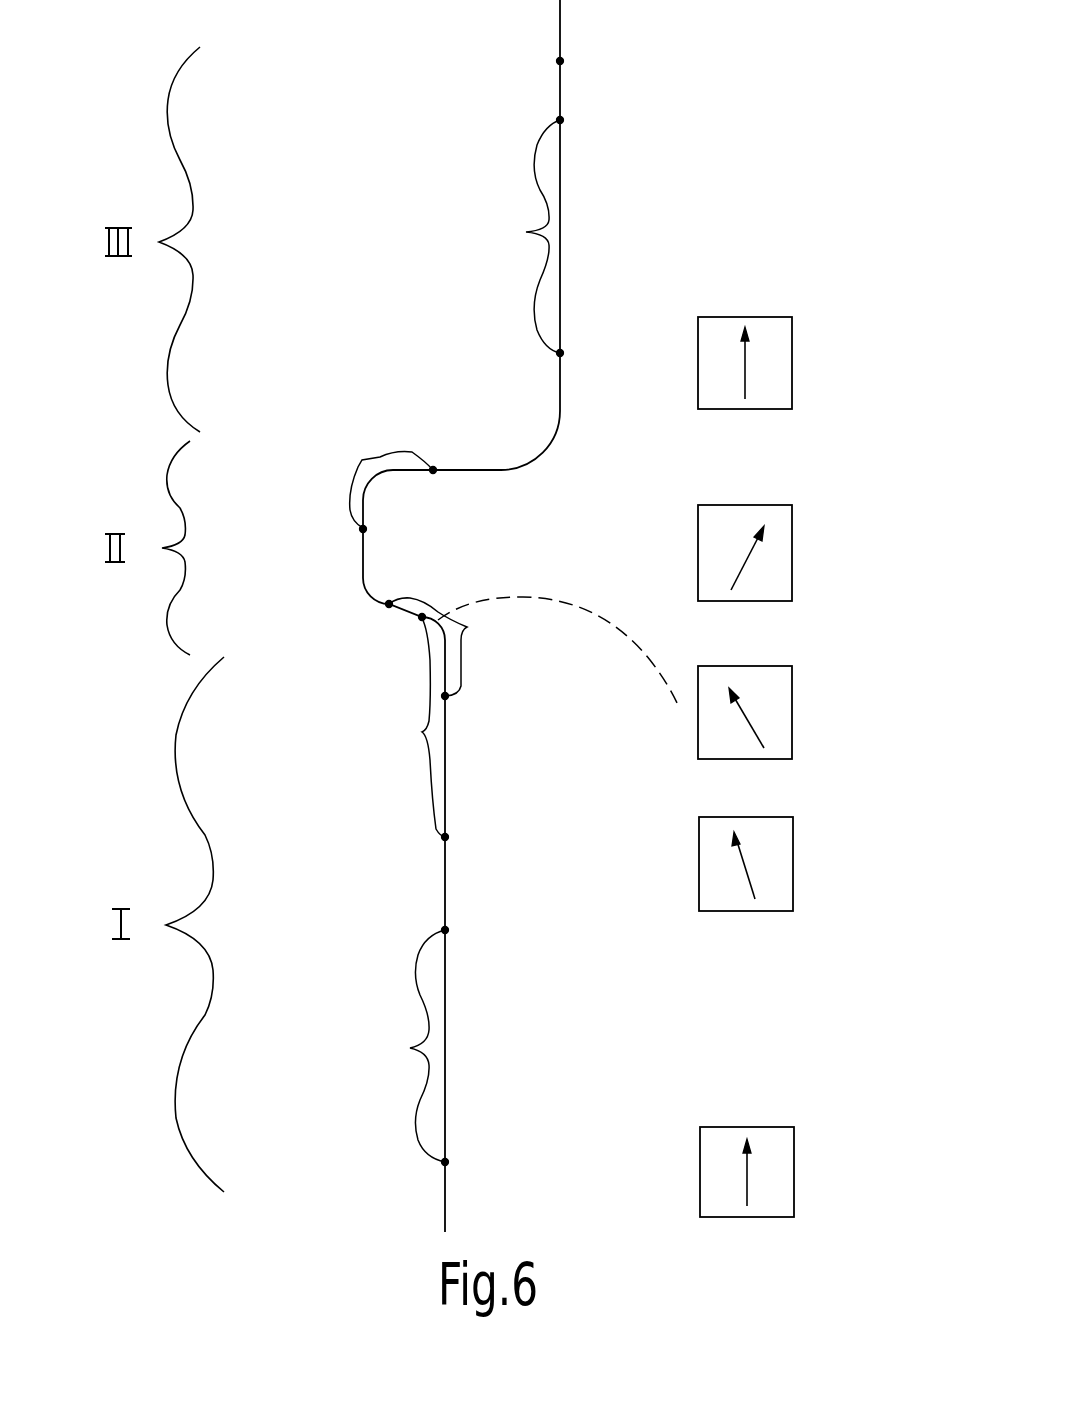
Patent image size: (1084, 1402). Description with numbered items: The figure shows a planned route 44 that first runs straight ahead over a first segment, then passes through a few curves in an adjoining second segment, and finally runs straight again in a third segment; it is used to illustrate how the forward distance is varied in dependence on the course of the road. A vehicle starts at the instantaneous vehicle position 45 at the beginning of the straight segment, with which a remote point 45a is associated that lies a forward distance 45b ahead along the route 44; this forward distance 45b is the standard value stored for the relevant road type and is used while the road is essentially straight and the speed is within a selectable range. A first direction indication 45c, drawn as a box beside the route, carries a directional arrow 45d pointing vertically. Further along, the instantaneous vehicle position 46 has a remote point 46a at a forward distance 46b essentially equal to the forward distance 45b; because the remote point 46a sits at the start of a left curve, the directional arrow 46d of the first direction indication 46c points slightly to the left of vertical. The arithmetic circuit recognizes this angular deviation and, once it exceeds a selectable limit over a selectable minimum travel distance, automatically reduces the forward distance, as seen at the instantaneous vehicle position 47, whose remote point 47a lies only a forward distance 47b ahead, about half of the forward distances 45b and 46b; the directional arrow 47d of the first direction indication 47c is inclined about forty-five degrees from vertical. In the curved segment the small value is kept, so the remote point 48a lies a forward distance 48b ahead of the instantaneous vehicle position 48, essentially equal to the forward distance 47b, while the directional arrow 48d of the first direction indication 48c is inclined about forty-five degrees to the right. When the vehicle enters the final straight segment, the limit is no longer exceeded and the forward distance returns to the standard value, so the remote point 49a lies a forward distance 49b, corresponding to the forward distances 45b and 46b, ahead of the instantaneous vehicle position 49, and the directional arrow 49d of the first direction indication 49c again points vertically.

The planned route 44 is at (561, 44).
The instantaneous vehicle position 45 is at (449, 1162).
The remote point 45a is at (449, 930).
The forward distance 45b is at (403, 1046).
The first direction indication 45c is at (779, 1189).
The directional arrow 45d is at (748, 1174).
The instantaneous vehicle position 46 is at (450, 838).
The remote point 46a is at (419, 620).
The forward distance 46b is at (408, 727).
The first direction indication 46c is at (776, 877).
The directional arrow 46d is at (742, 867).
The instantaneous vehicle position 47 is at (447, 699).
The remote point 47a is at (392, 598).
The forward distance 47b is at (453, 647).
The first direction indication 47c is at (779, 726).
The directional arrow 47d is at (746, 720).
The instantaneous vehicle position 48 is at (360, 535).
The remote point 48a is at (436, 466).
The forward distance 48b is at (376, 473).
The first direction indication 48c is at (776, 567).
The directional arrow 48d is at (746, 558).
The instantaneous vehicle position 49 is at (565, 353).
The remote point 49a is at (565, 119).
The forward distance 49b is at (521, 236).
The first direction indication 49c is at (779, 349).
The directional arrow 49d is at (745, 362).